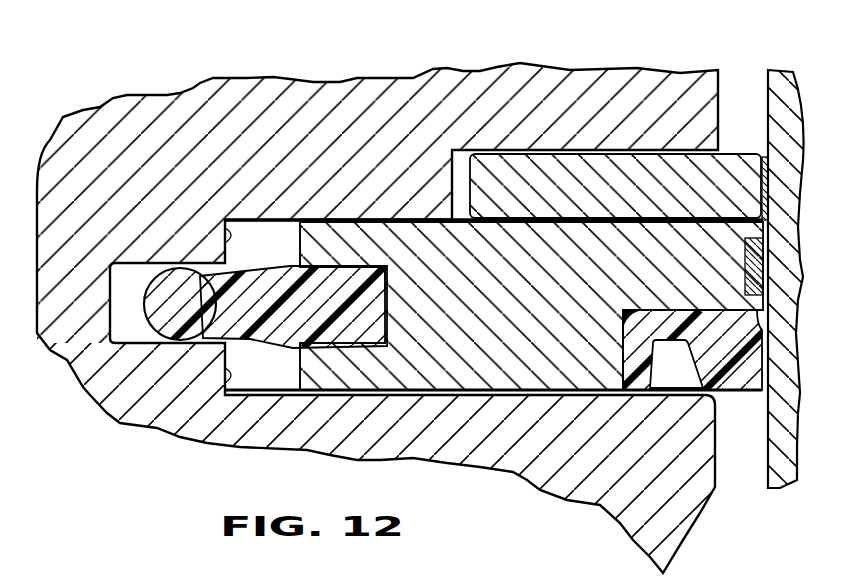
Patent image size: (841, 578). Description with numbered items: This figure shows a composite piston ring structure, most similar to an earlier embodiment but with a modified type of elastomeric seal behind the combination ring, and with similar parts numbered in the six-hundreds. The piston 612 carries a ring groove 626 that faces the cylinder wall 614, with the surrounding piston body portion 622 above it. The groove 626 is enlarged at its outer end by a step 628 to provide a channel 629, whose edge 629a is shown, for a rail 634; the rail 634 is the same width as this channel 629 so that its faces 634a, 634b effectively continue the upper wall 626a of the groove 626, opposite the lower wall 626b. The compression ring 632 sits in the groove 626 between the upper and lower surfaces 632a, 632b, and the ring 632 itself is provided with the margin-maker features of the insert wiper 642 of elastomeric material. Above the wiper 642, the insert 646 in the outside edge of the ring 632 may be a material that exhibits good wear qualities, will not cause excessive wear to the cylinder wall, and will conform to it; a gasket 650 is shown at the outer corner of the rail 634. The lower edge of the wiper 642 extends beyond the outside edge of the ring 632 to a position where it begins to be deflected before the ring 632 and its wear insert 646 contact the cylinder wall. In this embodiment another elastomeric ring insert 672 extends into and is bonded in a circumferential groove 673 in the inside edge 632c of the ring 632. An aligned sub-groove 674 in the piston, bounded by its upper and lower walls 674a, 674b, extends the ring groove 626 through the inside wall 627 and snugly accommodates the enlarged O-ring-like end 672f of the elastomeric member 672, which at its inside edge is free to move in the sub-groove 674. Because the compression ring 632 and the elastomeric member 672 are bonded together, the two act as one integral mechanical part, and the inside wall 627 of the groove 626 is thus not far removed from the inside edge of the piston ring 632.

The housing 612 is at (680, 77).
The end wall 614 is at (773, 87).
The housing bore portion 622 is at (690, 121).
The groove 626 is at (270, 230).
The upper wall 626a is at (343, 220).
The lower liner portion 626b is at (280, 392).
The inside wall 627 is at (223, 223).
The step 628 is at (452, 195).
The channel 629 is at (452, 148).
The step surface 629a is at (500, 152).
The compression ring 632 is at (533, 314).
The upper surface of insert 632a is at (650, 233).
The lower surface of insert 632b is at (583, 388).
The inside edge 632c is at (307, 240).
The rail 634 is at (633, 201).
The upper plate surface 634a is at (640, 157).
The lower plate surface 634b is at (565, 213).
The insert wiper 642 is at (740, 377).
The insert 646 is at (745, 277).
The gasket 650 is at (743, 156).
The elastomeric ring insert 672 is at (297, 317).
The enlarged O-ring-like end 672f is at (198, 317).
The circumferential groove 673 is at (382, 283).
The sub-groove 674 is at (128, 310).
The upper retainer wall 674a is at (136, 268).
The lower retainer wall 674b is at (148, 340).